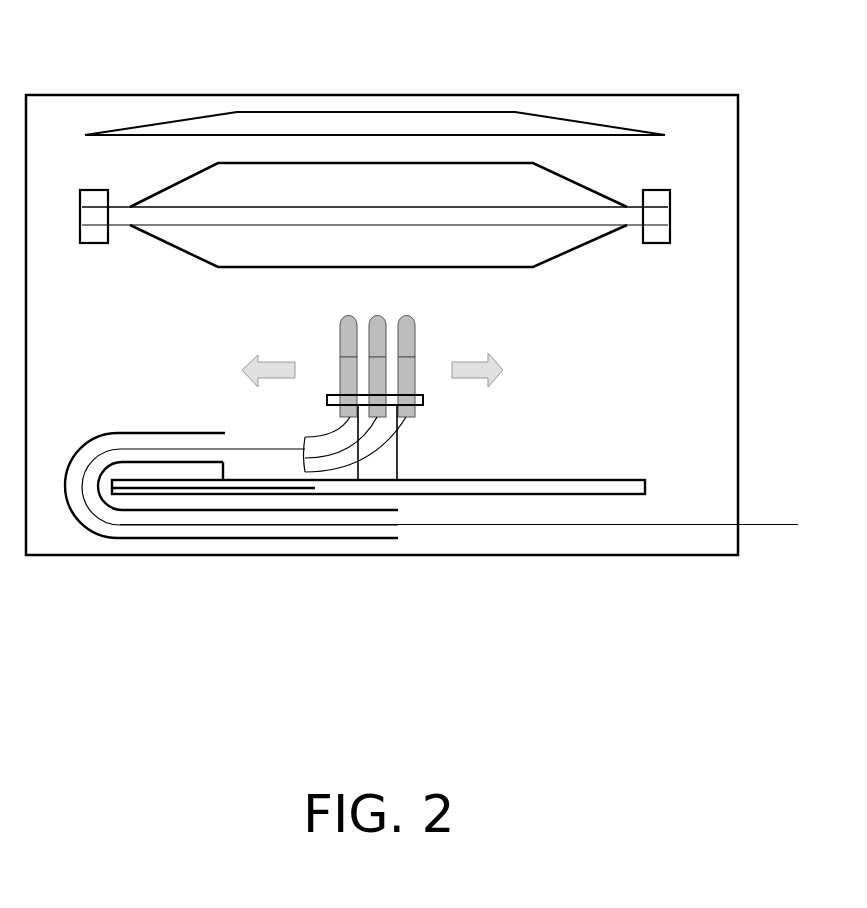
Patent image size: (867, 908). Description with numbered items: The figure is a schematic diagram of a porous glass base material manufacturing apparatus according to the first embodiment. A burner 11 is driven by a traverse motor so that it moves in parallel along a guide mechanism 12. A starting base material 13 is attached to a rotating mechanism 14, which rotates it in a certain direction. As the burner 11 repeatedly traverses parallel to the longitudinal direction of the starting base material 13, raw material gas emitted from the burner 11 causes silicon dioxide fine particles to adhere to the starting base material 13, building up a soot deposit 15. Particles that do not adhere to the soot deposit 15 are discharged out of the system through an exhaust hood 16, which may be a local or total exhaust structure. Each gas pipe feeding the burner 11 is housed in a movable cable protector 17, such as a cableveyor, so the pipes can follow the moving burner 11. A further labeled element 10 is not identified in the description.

The flexible conductor 10 is at (250, 447).
The burner 11 is at (423, 340).
The guide mechanism 12 is at (563, 487).
The starting base material 13 is at (562, 225).
The rotating mechanism 14 is at (652, 243).
The soot deposit 15 is at (513, 268).
The exhaust hood 16 is at (453, 112).
The movable cable protector 17 is at (213, 540).